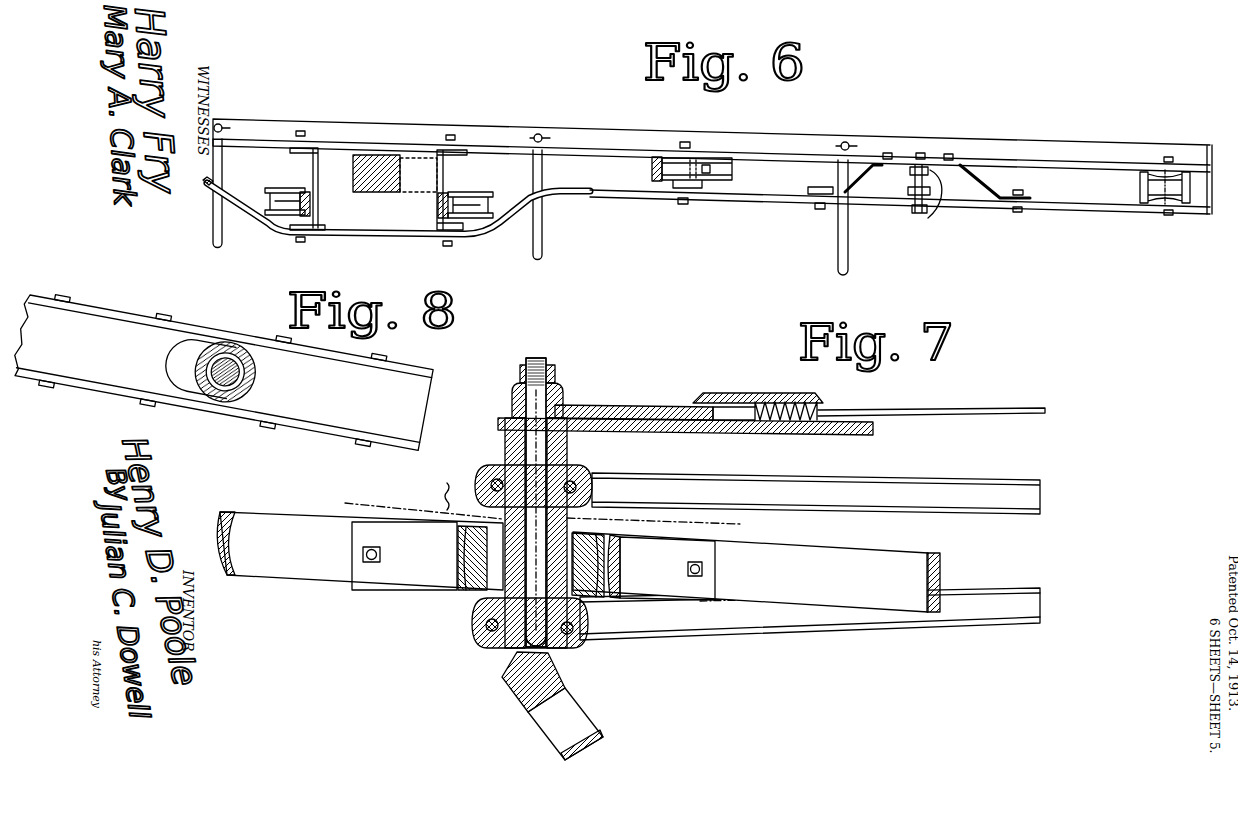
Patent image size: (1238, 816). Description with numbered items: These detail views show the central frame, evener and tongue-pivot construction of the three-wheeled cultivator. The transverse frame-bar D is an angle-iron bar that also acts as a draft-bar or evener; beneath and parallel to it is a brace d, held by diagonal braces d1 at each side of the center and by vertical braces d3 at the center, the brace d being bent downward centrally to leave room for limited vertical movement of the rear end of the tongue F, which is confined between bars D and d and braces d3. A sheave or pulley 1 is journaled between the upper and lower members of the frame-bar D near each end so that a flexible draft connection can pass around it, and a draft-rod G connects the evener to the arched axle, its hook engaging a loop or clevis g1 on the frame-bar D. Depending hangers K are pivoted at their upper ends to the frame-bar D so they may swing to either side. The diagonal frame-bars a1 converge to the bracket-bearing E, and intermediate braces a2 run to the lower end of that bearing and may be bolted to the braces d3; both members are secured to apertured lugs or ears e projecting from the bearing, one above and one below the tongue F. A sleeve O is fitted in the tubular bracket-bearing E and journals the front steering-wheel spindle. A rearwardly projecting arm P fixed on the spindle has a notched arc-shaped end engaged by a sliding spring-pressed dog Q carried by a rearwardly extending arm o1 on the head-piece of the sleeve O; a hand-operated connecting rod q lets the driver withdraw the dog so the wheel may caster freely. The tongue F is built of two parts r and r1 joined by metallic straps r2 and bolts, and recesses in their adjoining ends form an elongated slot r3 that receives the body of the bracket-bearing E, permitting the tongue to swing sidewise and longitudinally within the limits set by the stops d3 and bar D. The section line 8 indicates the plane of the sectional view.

In FIG. 6, the frame-bar D is at (920, 140).
In FIG. 6, the brace d is at (206, 186).
In FIG. 6, the diagonal braces d1 is at (983, 183).
In FIG. 6, the vertical braces d3 is at (460, 176).
In FIG. 6, the tongue F is at (376, 193).
In FIG. 8, the tongue F is at (68, 403).
In FIG. 7, the tongue F is at (292, 596).
In FIG. 6, the frame-bars a1 is at (672, 170).
In FIG. 7, the frame-bars a1 is at (882, 487).
In FIG. 6, the intermediate braces a2 is at (497, 240).
In FIG. 7, the intermediate braces a2 is at (968, 603).
In FIG. 6, the hangers K is at (849, 248).
In FIG. 6, the draft-rod G is at (910, 193).
In FIG. 6, the loop or clevis g1 is at (936, 212).
In FIG. 6, the sheave or pulley 1 is at (1158, 188).
In FIG. 8, the tongue part r is at (88, 351).
In FIG. 7, the tongue part r is at (360, 551).
In FIG. 8, the tongue part r1 is at (222, 372).
In FIG. 7, the tongue part r1 is at (756, 572).
In FIG. 8, the metallic straps r2 is at (94, 304).
In FIG. 7, the metallic straps r2 is at (405, 565).
In FIG. 8, the slot or opening r3 is at (183, 367).
In FIG. 7, the slot or opening r3 is at (470, 562).
In FIG. 8, the bracket-bearing E is at (247, 392).
In FIG. 7, the bracket-bearing E is at (507, 447).
In FIG. 8, the sleeve O is at (222, 358).
In FIG. 7, the sleeve O is at (516, 570).
In FIG. 7, the lugs or ears e is at (477, 477).
In FIG. 7, the arm P is at (623, 415).
In FIG. 7, the spring-pressed dog Q is at (745, 396).
In FIG. 7, the connecting rod q is at (975, 410).
In FIG. 7, the arm o1 is at (826, 430).
In FIG. 7, the section line 8 is at (540, 511).